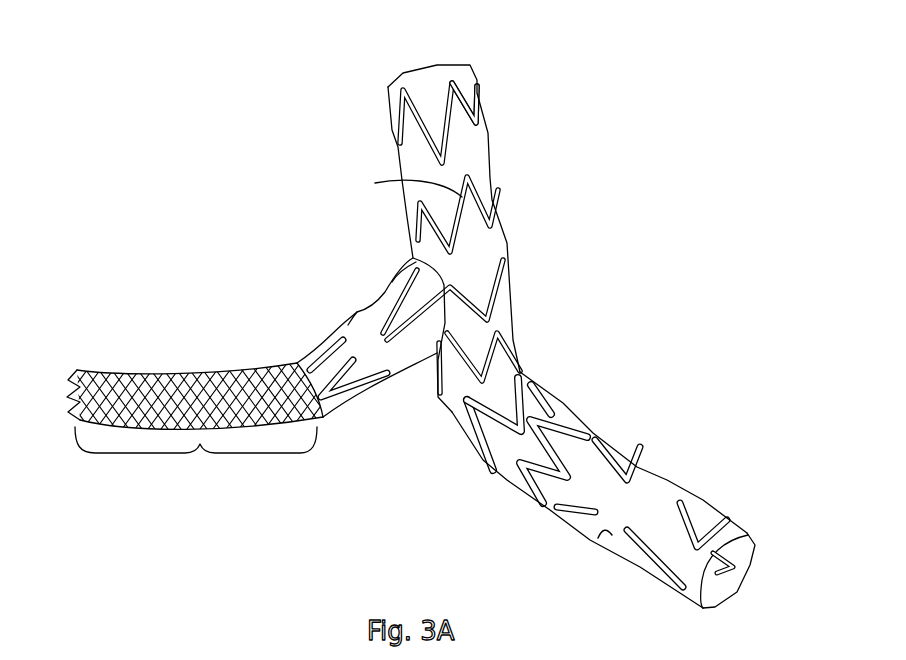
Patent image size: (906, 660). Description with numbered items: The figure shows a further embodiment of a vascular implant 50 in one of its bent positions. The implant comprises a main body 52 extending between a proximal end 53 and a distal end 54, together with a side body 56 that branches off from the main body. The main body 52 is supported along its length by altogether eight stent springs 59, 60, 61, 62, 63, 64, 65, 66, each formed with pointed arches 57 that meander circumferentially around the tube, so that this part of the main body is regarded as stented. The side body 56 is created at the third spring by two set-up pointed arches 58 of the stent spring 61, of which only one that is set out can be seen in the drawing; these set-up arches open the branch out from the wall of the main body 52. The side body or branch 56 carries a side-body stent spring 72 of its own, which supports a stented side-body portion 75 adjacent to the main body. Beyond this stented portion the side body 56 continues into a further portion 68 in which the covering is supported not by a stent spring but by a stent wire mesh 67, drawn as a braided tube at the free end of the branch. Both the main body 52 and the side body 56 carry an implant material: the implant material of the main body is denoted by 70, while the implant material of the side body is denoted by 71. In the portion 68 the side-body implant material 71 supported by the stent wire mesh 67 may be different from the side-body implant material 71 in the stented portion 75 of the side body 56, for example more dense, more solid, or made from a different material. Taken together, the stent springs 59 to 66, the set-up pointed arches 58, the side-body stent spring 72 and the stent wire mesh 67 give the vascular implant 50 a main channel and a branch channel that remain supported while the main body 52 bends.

The vascular implant 50 is at (288, 197).
The main body 52 is at (492, 142).
The proximal end 53 is at (438, 70).
The distal end 54 is at (752, 543).
The side body 56 is at (340, 413).
The pointed arches 57 is at (453, 467).
The set-up pointed arches 58 is at (397, 300).
The stent spring 59 is at (480, 93).
The stent spring 60 is at (503, 207).
The stent spring 61 is at (507, 283).
The stent spring 62 is at (510, 353).
The stent spring 63 is at (543, 397).
The stent spring 64 is at (593, 433).
The stent spring 65 is at (623, 463).
The stent spring 66 is at (703, 507).
The stent wire mesh 67 is at (173, 378).
The portion supported by stent wire mesh 68 is at (196, 454).
The implant material of the main body 70 is at (603, 543).
The side-body implant material 71 is at (340, 341).
The side-body stent spring 72 is at (360, 389).
The stented side-body portion 75 is at (352, 312).